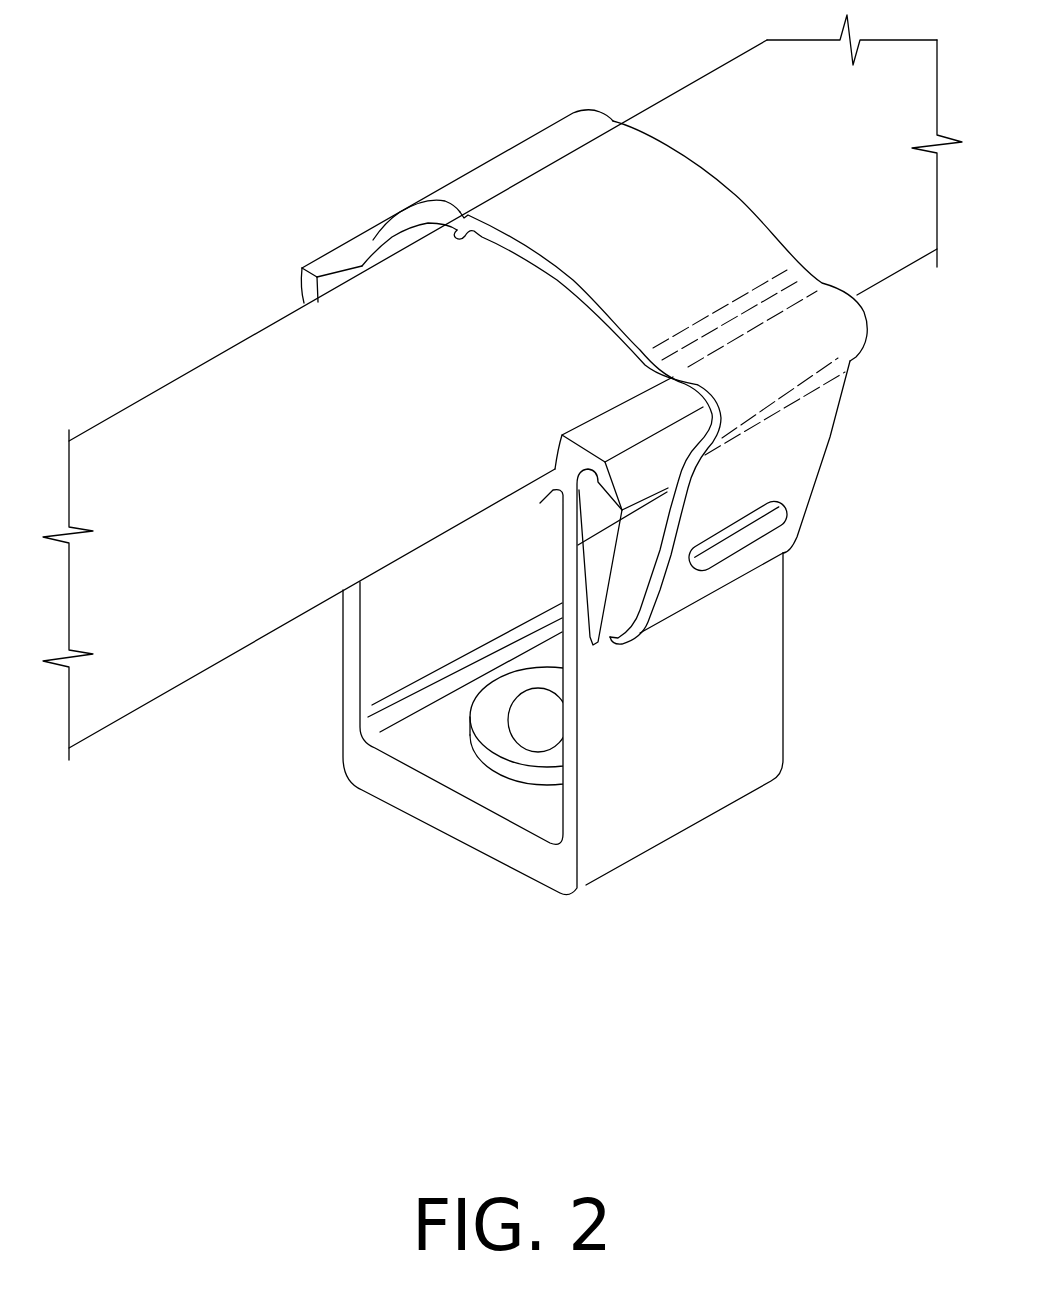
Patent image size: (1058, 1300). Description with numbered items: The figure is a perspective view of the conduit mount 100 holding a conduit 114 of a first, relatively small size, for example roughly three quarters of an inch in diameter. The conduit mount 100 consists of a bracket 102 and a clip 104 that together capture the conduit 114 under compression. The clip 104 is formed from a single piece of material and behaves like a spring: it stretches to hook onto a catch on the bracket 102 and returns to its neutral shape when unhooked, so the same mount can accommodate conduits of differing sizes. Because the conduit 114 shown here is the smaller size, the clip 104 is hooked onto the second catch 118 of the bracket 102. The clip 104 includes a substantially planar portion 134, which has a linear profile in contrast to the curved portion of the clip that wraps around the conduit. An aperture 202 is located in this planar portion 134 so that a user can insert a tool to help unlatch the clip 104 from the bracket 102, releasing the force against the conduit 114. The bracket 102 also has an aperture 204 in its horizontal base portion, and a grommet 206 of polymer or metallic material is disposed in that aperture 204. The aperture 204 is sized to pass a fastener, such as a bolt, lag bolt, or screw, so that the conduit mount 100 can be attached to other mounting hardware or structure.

The conduit mount 100 is at (381, 38).
The bracket 102 is at (623, 636).
The clip 104 is at (414, 176).
The conduit 114 is at (254, 336).
The second catch 118 is at (587, 626).
The planar portion 134 is at (794, 497).
The aperture 202 is at (740, 546).
The aperture 204 is at (530, 712).
The grommet 206 is at (497, 760).